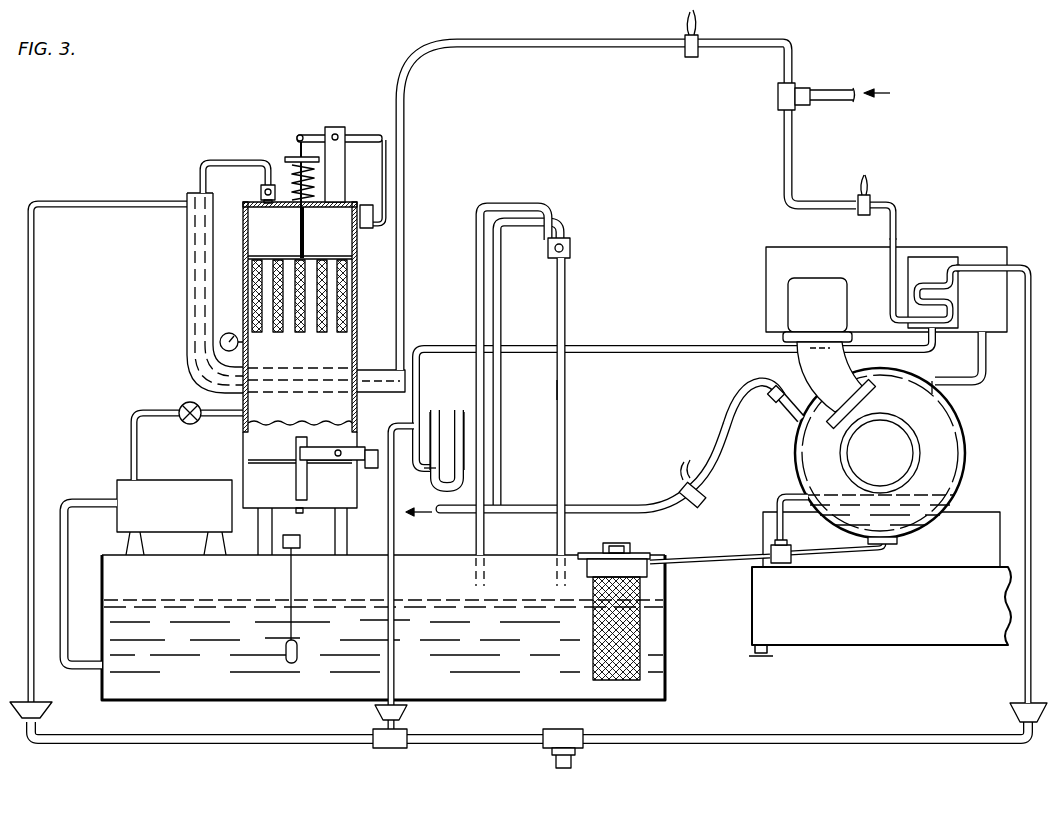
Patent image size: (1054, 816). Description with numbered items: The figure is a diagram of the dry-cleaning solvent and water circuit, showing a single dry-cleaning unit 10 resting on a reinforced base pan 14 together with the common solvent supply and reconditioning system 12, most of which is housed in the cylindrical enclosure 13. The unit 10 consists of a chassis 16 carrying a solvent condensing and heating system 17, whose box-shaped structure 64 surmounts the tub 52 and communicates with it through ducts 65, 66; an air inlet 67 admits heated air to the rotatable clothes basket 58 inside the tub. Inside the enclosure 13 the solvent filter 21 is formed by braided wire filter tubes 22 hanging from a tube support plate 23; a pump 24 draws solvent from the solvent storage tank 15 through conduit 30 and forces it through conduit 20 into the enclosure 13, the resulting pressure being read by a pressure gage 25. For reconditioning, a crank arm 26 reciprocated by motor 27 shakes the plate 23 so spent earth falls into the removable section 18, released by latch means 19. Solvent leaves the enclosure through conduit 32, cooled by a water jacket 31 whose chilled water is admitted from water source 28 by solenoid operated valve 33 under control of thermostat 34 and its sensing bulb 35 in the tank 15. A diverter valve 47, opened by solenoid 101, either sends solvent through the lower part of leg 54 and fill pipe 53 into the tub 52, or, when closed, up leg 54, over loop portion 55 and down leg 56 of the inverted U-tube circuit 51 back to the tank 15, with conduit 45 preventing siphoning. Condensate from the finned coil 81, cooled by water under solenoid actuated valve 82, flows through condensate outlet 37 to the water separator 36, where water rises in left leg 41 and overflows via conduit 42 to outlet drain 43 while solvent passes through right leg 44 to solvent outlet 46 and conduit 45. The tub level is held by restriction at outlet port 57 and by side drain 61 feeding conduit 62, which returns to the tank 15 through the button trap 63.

The dry-cleaning unit 10 is at (880, 584).
The solvent supply and reconditioning system 12 is at (372, 284).
The cylindrical enclosure 13 is at (357, 333).
The base pan 14 is at (752, 607).
The solvent storage tank 15 is at (667, 672).
The chassis 16 is at (968, 495).
The solvent condensing and heating system 17 is at (1010, 247).
The removable section 18 is at (243, 470).
The latch means 19 is at (375, 468).
The conduit 20 is at (148, 408).
The solvent filter 21 is at (285, 246).
The filter tubes 22 is at (286, 333).
The tube support plate 23 is at (300, 256).
The pump 24 is at (174, 517).
The pressure gage 25 is at (229, 332).
The crank arm 26 is at (366, 135).
The motor 27 is at (370, 229).
The water source 28 is at (835, 90).
The conduit 30 is at (66, 502).
The water jacket 31 is at (187, 266).
The conduit 32 is at (202, 163).
The solenoid operated valve 33 is at (702, 40).
The solvent cooling thermostat 34 is at (299, 541).
The sensing bulb 35 is at (297, 660).
The water separator 36 is at (426, 474).
The condensate outlet 37 is at (646, 346).
The left leg 41 is at (436, 412).
The conduit 42 is at (388, 518).
The outlet drain 43 is at (412, 425).
The right leg 44 is at (458, 412).
The conduit 45 is at (486, 535).
The solvent outlet 46 is at (462, 446).
The diverter valve 47 is at (700, 506).
The inverted U-tube circuit 51 is at (585, 285).
The tub 52 is at (966, 450).
The solvent fill pipe 53 is at (791, 412).
The left hand leg 54 is at (505, 298).
The loop portion 55 is at (549, 215).
The right hand leg 56 is at (568, 385).
The tub outlet port 57 is at (900, 543).
The clothes basket 58 is at (942, 398).
The side drain 61 is at (782, 490).
The conduit 62 is at (707, 562).
The button trap 63 is at (596, 668).
The box-shaped structure 64 is at (766, 250).
The duct 65 is at (980, 382).
The duct 66 is at (802, 370).
The air inlet 67 is at (848, 420).
The finned coil 81 is at (933, 265).
The solenoid actuated valve 82 is at (873, 205).
The solenoid 101 is at (698, 480).